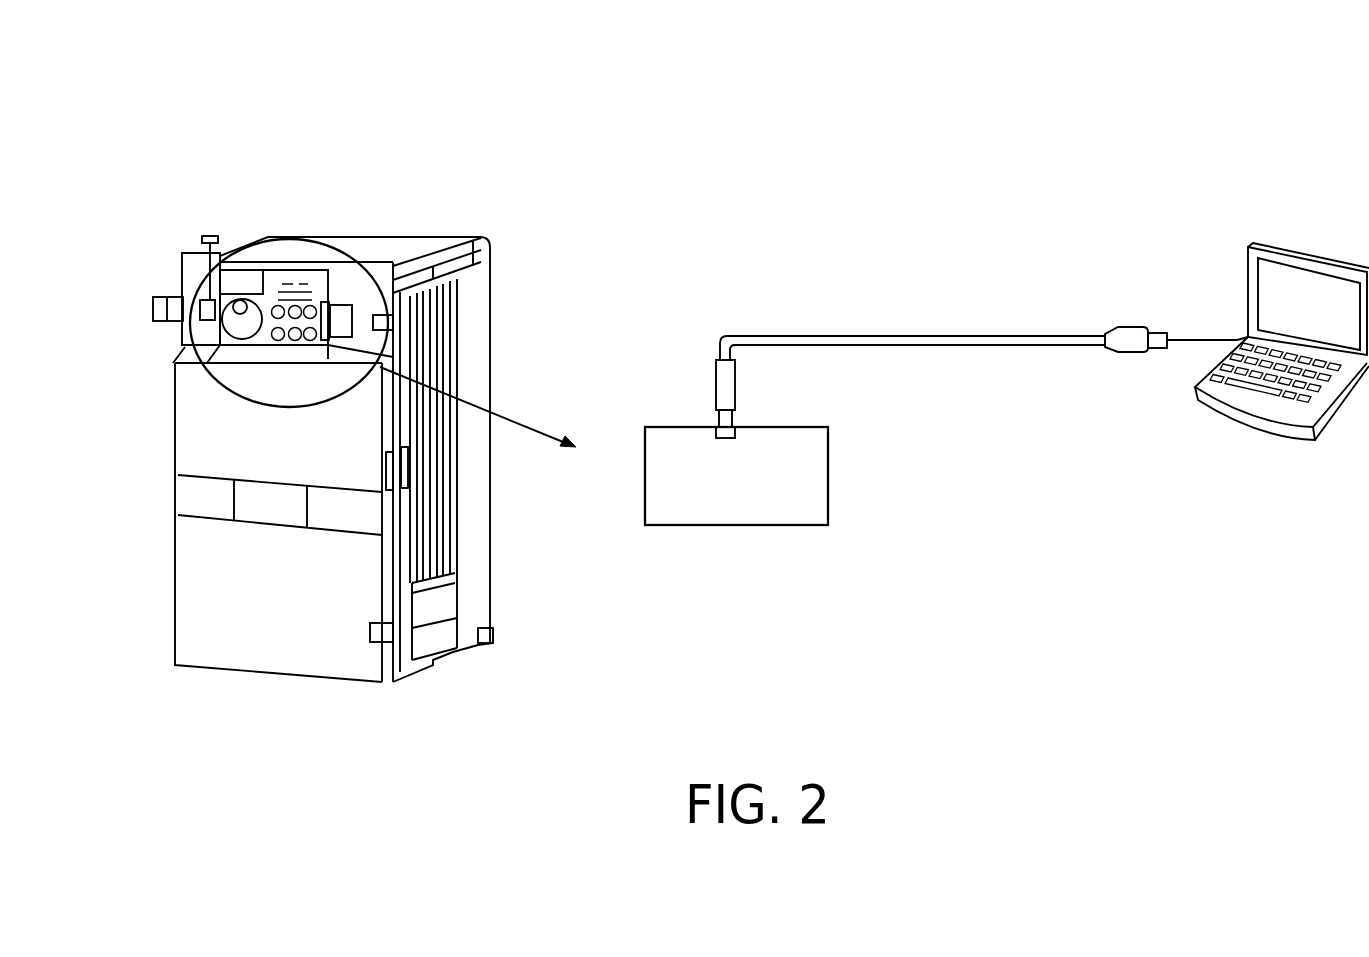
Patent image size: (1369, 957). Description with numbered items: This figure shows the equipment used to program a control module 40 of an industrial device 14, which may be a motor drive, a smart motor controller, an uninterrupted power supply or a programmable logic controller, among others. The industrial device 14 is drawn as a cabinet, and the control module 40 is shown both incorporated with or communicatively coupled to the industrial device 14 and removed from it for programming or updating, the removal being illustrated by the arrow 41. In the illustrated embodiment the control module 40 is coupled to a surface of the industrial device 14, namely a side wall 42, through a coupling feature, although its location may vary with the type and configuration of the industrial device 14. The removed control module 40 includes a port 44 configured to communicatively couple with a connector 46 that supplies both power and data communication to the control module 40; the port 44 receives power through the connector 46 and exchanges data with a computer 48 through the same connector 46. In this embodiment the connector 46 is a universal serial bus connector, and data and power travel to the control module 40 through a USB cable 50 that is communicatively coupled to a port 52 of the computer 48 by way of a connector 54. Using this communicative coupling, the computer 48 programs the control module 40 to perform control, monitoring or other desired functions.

The industrial device 14 is at (492, 320).
The control module 40 is at (310, 238).
The arrow 41 is at (530, 428).
The side wall 42 is at (197, 425).
The port 44 is at (713, 435).
The connector 46 is at (735, 382).
The computer 48 is at (1257, 425).
The USB cable 50 is at (867, 335).
The port 52 is at (1237, 343).
The connector 54 is at (1127, 357).